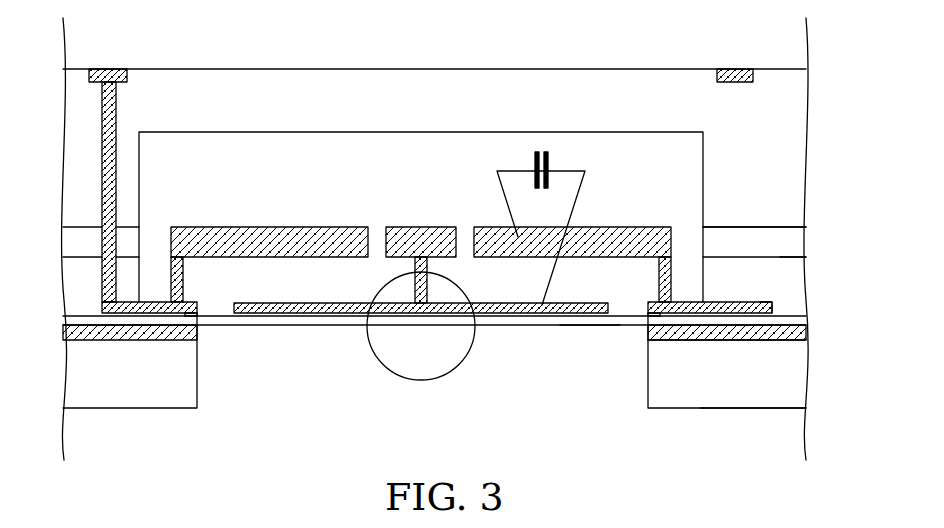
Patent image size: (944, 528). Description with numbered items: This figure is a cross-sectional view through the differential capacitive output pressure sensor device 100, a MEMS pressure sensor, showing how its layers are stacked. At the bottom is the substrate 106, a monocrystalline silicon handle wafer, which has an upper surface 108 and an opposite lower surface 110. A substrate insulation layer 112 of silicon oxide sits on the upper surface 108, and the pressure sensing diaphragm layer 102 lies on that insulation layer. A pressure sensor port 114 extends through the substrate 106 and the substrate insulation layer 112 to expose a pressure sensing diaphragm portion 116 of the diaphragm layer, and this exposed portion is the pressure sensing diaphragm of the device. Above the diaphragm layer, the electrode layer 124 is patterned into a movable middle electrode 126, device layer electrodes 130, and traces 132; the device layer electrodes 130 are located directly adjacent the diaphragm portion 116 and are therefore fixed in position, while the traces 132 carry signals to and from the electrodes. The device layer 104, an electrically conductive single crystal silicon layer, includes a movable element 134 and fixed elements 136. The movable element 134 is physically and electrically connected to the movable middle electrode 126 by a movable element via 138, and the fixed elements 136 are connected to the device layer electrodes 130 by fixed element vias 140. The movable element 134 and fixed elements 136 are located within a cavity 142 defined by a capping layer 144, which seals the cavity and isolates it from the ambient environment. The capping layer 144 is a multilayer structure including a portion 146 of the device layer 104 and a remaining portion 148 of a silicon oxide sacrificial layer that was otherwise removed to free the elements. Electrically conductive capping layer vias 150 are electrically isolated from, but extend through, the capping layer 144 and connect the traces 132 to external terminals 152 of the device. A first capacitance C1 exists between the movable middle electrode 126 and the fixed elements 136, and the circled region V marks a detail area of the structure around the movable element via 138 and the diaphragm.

The differential capacitive output pressure sensor device 100 is at (182, 452).
The pressure sensing diaphragm layer 102 is at (813, 318).
The device layer 104 is at (813, 240).
The substrate 106 is at (704, 383).
The upper surface 108 is at (779, 340).
The lower surface 110 is at (755, 408).
The substrate insulation layer 112 is at (812, 335).
The pressure sensor port 114 is at (279, 383).
The pressure sensing diaphragm portion 116 is at (590, 330).
The electrode layer 124 is at (774, 309).
The movable middle electrode 126 is at (505, 316).
The device layer electrode 130 is at (193, 312).
The traces 132 is at (146, 315).
The movable element 134 is at (410, 227).
The fixed elements 136 is at (184, 227).
The movable element via 138 is at (415, 268).
The fixed element vias 140 is at (183, 266).
The cavity 142 is at (279, 183).
The capping layer 144 is at (437, 90).
The portion of device layer 146 is at (757, 227).
The remaining portion of sacrificial layer 148 is at (808, 262).
The capping layer vias 150 is at (117, 106).
The external terminals 152 is at (108, 75).
The first capacitance C1 is at (541, 226).
The detail region V is at (458, 368).